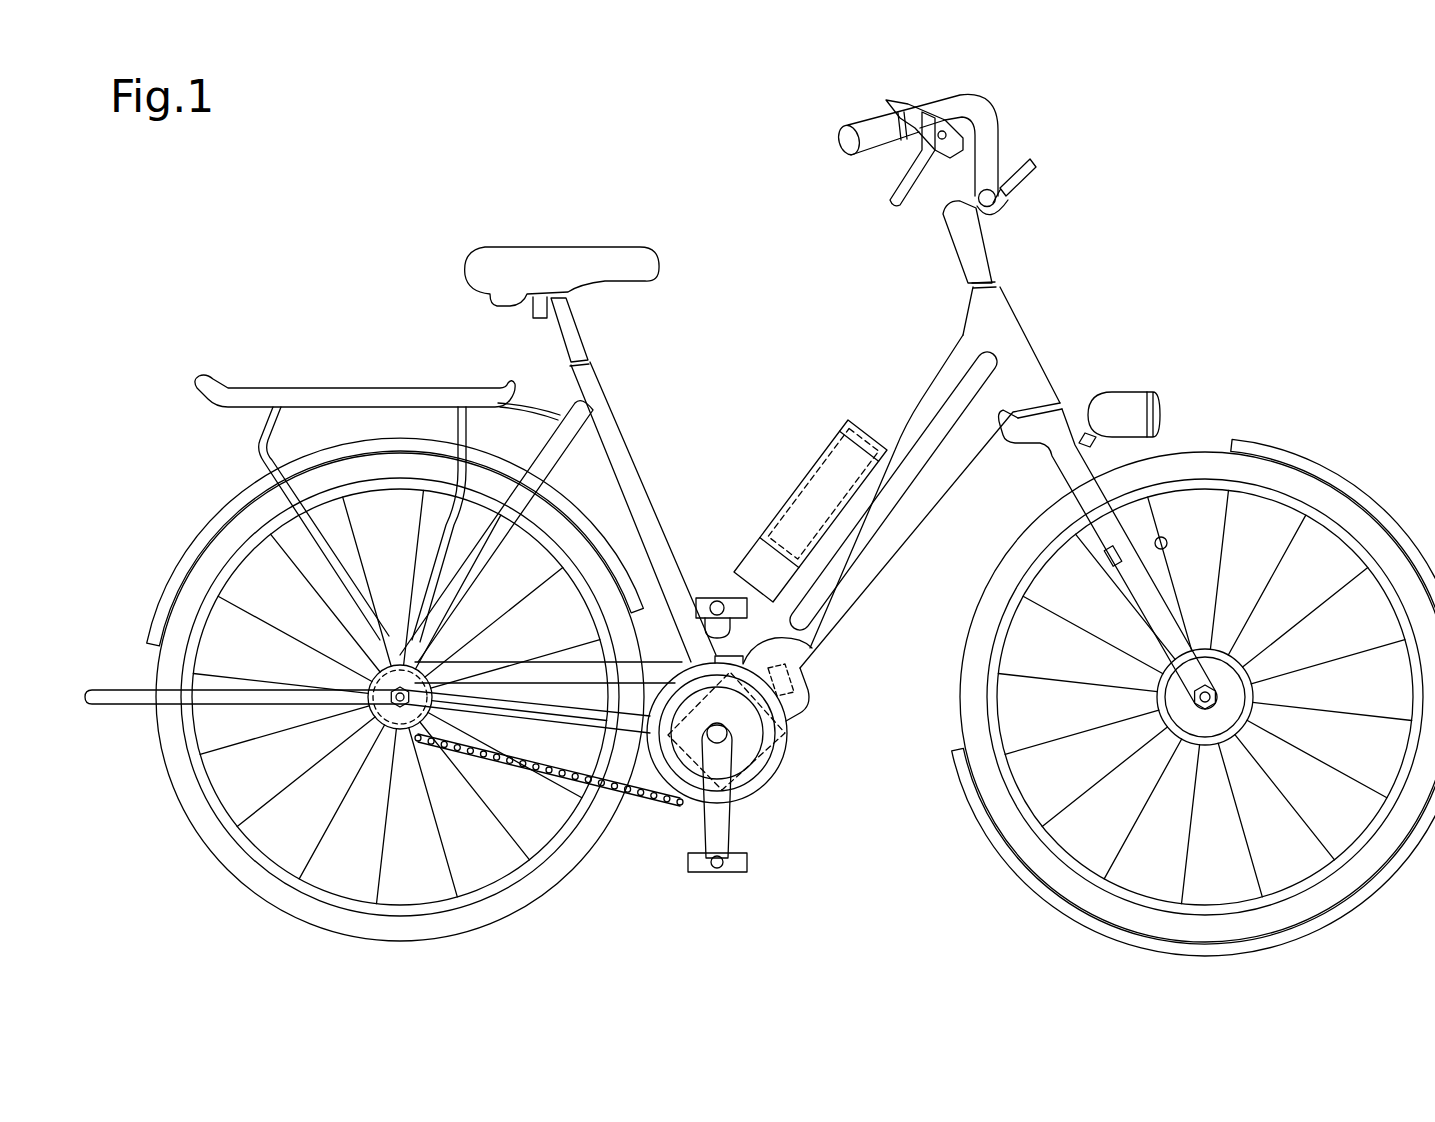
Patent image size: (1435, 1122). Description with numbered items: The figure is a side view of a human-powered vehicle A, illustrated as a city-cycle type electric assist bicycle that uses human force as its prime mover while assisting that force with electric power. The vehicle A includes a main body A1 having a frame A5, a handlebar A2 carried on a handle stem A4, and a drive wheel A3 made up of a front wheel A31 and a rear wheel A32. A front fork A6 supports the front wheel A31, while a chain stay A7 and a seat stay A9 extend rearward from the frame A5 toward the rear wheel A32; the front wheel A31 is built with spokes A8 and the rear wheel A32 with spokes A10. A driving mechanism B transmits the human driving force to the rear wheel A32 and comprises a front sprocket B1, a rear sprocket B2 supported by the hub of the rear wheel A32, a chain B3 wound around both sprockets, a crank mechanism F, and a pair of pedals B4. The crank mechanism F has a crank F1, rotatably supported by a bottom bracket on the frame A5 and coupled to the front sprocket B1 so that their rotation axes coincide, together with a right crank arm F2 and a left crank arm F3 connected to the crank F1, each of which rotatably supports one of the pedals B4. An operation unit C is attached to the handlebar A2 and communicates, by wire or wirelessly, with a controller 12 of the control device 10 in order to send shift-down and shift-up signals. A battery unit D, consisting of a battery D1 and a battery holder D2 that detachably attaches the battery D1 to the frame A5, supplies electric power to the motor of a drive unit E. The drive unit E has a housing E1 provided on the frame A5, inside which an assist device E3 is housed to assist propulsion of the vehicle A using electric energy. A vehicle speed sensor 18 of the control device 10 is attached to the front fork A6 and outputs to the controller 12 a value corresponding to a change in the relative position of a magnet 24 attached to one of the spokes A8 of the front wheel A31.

The human-powered vehicle A is at (1130, 122).
The main body A1 is at (1005, 312).
The handlebar A2 is at (866, 122).
The drive wheel A3 is at (761, 659).
The front wheel A31 is at (1350, 500).
The rear wheel A32 is at (158, 648).
The handle stem A4 is at (985, 100).
The frame A5 is at (963, 353).
The front fork A6 is at (1108, 559).
The chain stay A7 is at (508, 668).
The spokes A8 is at (1197, 697).
The seat stay A9 is at (468, 571).
The spokes A10 is at (291, 788).
The driving mechanism B is at (609, 748).
The front sprocket B1 is at (763, 790).
The rear sprocket B2 is at (358, 724).
The chain B3 is at (540, 772).
The pedals B4 is at (712, 595).
The operation unit C is at (890, 100).
The battery unit D is at (818, 464).
The battery D1 is at (828, 452).
The battery holder D2 is at (866, 436).
The drive unit E is at (805, 712).
The housing E1 is at (800, 644).
The assist device E3 is at (775, 745).
The crank mechanism F is at (737, 716).
The crank F1 is at (758, 780).
The right crank arm F2 is at (706, 828).
The left crank arm F3 is at (728, 596).
The human-powered vehicle control device 10 is at (855, 688).
The controller 12 is at (800, 680).
The vehicle speed sensor 18 is at (1108, 560).
The magnet 24 is at (1168, 543).